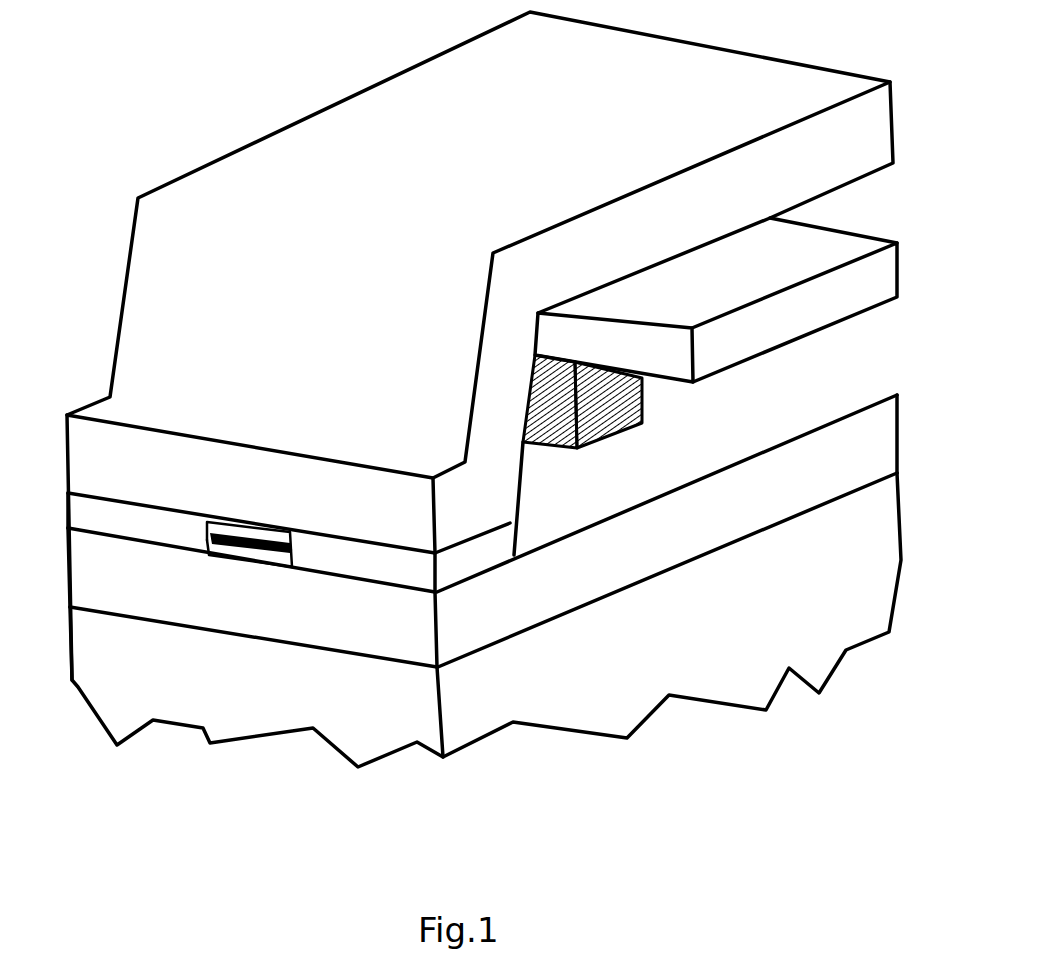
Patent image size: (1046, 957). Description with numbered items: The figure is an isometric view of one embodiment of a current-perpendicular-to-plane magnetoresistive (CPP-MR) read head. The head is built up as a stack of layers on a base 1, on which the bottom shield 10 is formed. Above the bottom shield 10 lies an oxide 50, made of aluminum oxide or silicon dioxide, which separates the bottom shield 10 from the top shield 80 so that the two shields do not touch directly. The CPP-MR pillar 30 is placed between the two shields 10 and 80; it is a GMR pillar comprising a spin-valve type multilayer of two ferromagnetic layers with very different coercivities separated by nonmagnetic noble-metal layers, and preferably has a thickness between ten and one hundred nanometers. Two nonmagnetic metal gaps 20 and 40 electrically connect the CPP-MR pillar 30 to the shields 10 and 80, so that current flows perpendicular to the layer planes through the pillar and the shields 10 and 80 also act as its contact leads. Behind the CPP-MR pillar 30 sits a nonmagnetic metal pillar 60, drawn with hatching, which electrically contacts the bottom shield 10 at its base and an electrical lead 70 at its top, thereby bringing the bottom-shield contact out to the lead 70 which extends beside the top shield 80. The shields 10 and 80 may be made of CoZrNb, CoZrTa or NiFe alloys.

The substrate 1 is at (721, 620).
The bottom shield 10 is at (115, 575).
The nonmagnetic metal gap 20 is at (230, 550).
The CPP-MR pillar 30 is at (248, 547).
The nonmagnetic metal gap 40 is at (270, 548).
The oxide 50 is at (103, 513).
The nonmagnetic metal pillar 60 is at (600, 410).
The electrical lead 70 is at (812, 293).
The top shield 80 is at (114, 460).